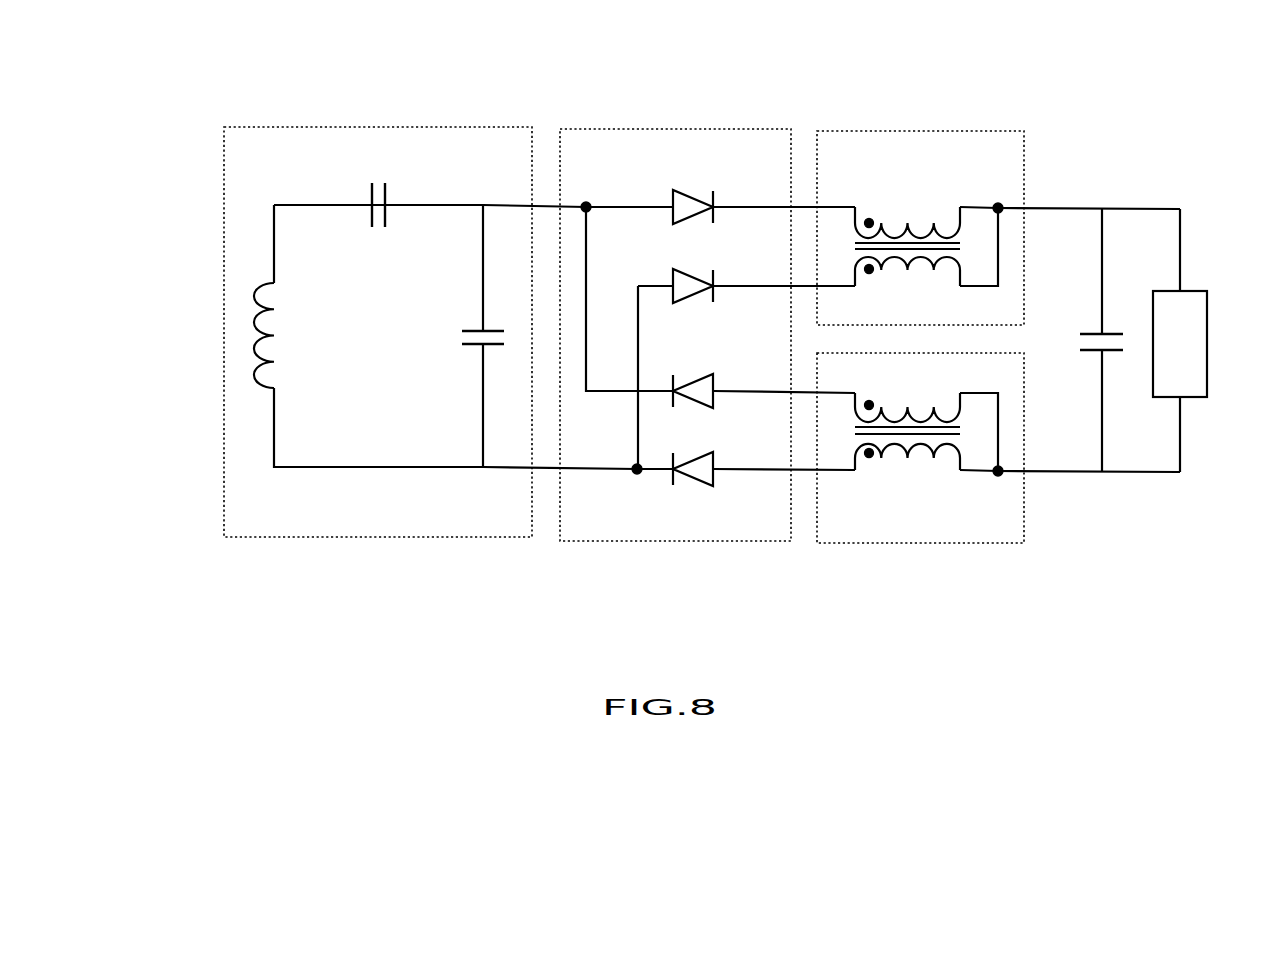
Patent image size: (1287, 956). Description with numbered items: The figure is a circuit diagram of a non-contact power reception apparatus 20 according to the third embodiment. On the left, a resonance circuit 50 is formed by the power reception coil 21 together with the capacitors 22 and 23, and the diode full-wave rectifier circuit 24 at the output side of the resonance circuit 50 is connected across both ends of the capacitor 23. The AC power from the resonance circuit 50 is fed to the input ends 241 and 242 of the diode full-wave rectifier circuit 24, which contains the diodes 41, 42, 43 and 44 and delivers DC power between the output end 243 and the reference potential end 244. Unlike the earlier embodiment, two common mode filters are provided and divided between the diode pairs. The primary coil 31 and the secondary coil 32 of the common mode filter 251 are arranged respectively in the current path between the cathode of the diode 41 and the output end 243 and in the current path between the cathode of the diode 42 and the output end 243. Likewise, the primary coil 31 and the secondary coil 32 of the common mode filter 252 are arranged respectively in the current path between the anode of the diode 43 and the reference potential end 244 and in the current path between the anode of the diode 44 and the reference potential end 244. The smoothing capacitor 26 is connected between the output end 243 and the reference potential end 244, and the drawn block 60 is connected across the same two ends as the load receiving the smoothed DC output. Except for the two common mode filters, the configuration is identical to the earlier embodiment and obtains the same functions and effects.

The power reception apparatus 20 is at (577, 58).
The resonance circuit 50 is at (370, 126).
The power reception coil 21 is at (252, 350).
The capacitor 22 is at (372, 230).
The capacitor 23 is at (452, 336).
The diode full-wave rectifier circuit 24 is at (673, 129).
The input end 241 is at (586, 201).
The input end 242 is at (637, 476).
The diode 41 is at (671, 188).
The diode 42 is at (671, 267).
The diode 43 is at (722, 374).
The diode 44 is at (722, 455).
The common mode filter 251 is at (893, 132).
The common mode filter 252 is at (921, 543).
The primary coil 31 is at (906, 220).
The secondary coil 32 is at (904, 272).
The output end 243 is at (998, 203).
The reference potential end 244 is at (998, 478).
The smoothing capacitor 26 is at (1088, 316).
The load 60 is at (1208, 313).